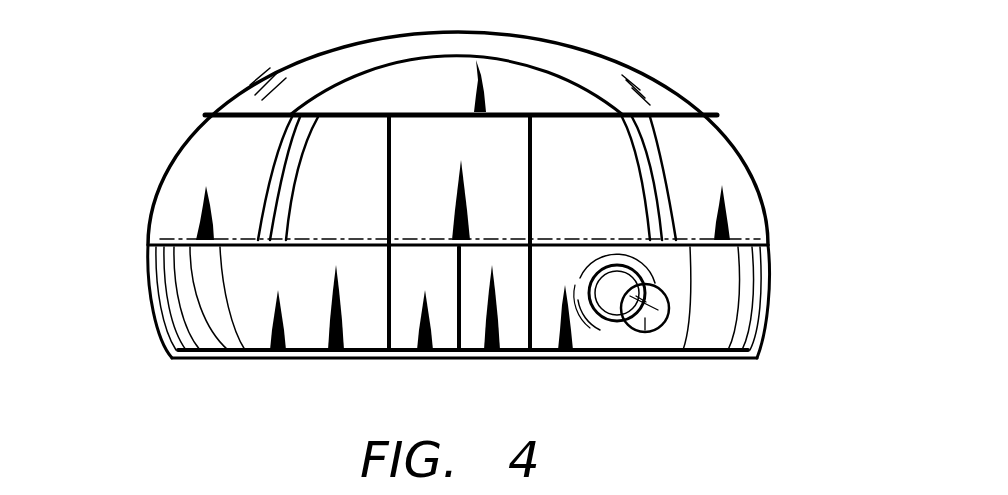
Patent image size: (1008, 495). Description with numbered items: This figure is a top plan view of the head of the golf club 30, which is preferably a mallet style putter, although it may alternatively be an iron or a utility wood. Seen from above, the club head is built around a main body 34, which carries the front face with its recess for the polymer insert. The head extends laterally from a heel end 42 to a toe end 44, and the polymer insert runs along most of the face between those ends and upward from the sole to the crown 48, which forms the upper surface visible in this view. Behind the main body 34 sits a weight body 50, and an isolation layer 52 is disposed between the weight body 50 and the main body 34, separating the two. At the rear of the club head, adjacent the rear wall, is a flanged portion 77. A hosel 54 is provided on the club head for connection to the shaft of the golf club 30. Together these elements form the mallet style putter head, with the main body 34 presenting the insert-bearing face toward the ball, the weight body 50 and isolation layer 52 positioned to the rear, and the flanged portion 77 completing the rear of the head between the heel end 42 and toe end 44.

The golf club 30 is at (800, 218).
The weight body 50 is at (552, 68).
The isolation layer 52 is at (707, 113).
The flanged portion 77 is at (718, 155).
The heel end 42 is at (770, 288).
The toe end 44 is at (150, 305).
The crown 48 is at (257, 328).
The body 34 is at (583, 335).
The hosel 54 is at (645, 318).